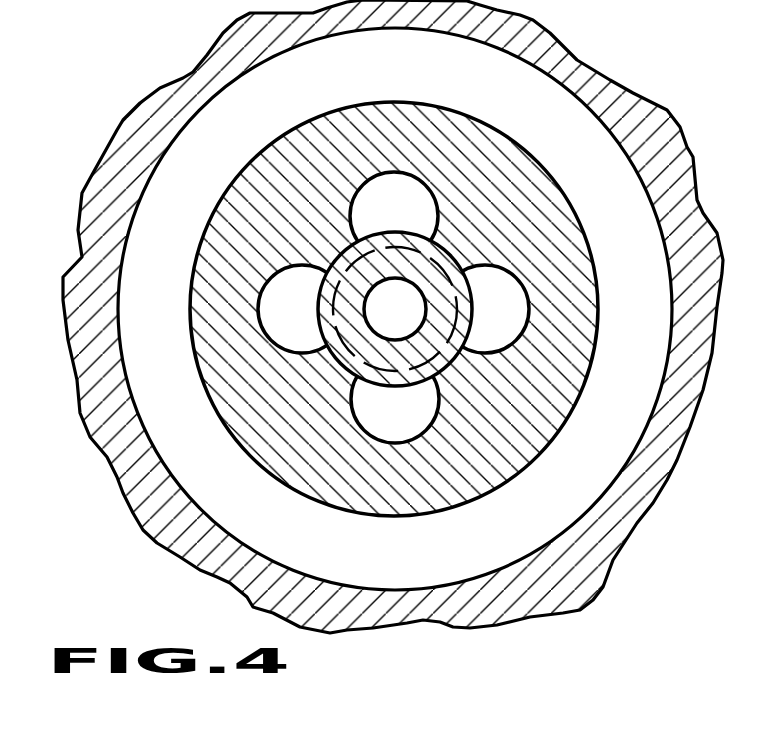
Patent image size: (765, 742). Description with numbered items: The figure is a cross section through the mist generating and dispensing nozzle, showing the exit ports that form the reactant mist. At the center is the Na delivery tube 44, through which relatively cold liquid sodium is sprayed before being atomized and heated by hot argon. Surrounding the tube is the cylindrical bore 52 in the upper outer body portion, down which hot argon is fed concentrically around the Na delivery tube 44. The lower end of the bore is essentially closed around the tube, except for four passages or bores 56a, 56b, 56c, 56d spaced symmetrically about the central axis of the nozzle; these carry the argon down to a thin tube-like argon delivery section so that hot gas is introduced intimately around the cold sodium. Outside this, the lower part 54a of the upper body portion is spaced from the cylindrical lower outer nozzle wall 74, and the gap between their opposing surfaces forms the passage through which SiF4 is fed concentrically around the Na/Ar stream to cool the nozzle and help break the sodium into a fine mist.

The Na delivery tube 44 is at (440, 265).
The cylindrical bore 52 is at (252, 131).
The lower part of the upper body portion 54a is at (563, 241).
The passage or bore 56a is at (383, 180).
The passage or bore 56b is at (517, 314).
The passage or bore 56c is at (391, 430).
The passage or bore 56d is at (280, 311).
The cylindrical lower outer nozzle wall 74 is at (597, 527).